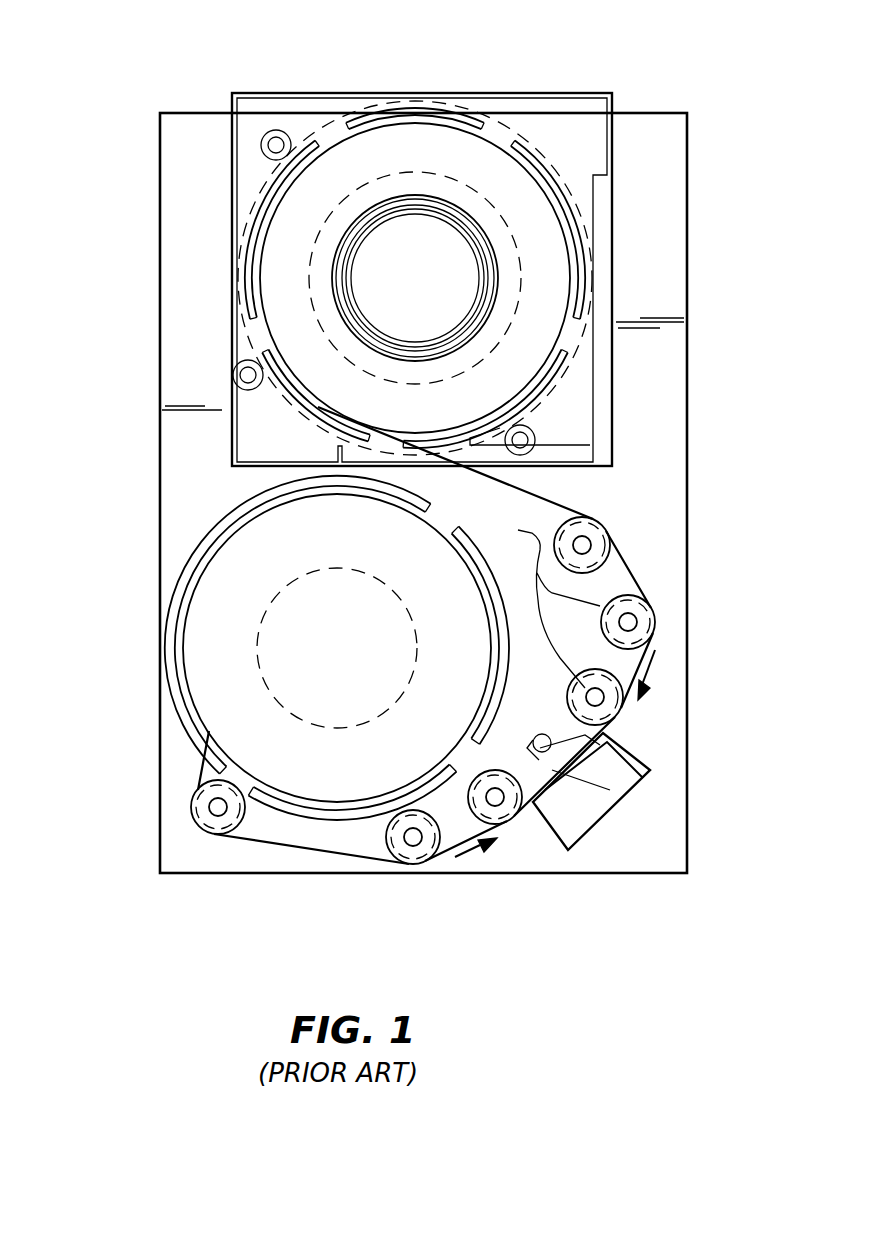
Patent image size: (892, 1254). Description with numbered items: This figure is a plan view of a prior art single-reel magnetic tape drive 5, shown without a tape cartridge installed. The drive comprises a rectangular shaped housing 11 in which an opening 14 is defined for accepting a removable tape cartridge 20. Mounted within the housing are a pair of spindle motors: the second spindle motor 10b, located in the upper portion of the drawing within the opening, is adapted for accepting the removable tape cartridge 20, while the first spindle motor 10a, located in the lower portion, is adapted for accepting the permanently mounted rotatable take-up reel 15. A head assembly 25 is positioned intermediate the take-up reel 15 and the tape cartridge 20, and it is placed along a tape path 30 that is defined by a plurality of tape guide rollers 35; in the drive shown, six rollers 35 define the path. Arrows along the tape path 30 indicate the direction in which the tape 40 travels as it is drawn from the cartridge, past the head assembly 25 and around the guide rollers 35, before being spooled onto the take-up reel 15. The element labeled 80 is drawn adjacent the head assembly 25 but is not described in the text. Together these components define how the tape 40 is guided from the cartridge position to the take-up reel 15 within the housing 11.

The magnetic tape drive 5 is at (103, 901).
The housing 11 is at (688, 393).
The opening 14 is at (230, 92).
The removable tape cartridge 20 is at (558, 130).
The second spindle motor 10b is at (395, 278).
The first spindle motor 10a is at (303, 625).
The take-up reel 15 is at (213, 665).
The tape guide rollers 35 is at (518, 530).
The tape path 30 is at (660, 636).
The tape 40 is at (323, 852).
The head assembly 25 is at (583, 805).
The blade 80 is at (613, 787).